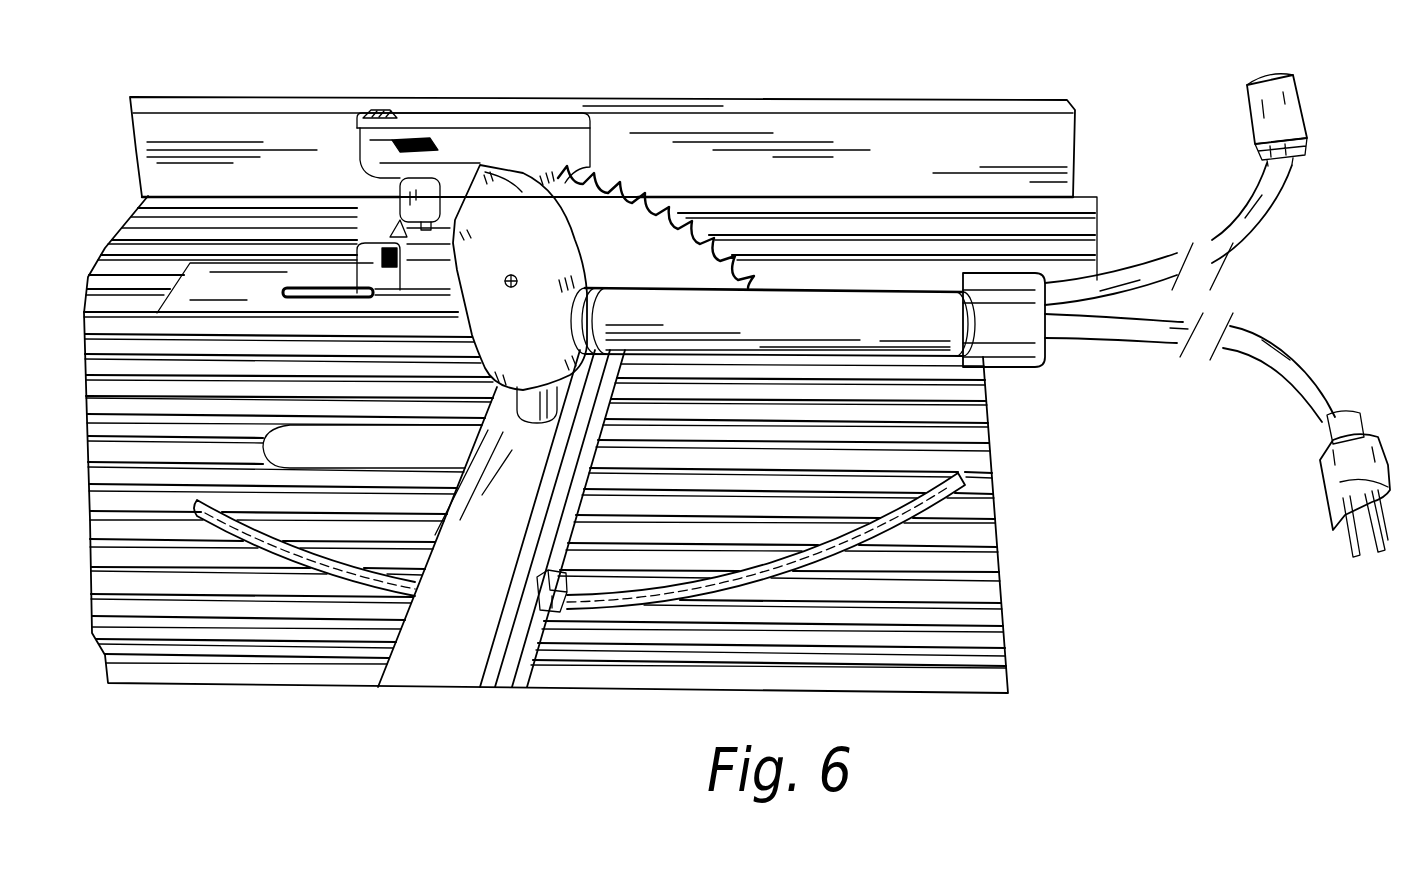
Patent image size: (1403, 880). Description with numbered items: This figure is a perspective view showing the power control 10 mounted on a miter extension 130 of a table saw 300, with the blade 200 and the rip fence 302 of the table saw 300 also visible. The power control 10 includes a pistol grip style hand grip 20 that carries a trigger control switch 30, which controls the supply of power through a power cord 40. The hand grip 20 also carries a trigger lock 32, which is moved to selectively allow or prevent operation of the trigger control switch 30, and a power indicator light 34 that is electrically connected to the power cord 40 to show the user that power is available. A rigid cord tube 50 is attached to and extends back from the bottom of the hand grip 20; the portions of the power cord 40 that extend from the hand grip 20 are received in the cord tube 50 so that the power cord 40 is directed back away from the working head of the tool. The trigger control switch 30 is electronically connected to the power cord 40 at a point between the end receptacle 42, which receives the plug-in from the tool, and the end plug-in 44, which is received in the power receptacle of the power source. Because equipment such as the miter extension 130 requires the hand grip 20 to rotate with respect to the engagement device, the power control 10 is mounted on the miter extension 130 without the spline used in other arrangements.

The power control 10 is at (605, 56).
The hand grip 20 is at (519, 254).
The trigger control switch 30 is at (400, 186).
The trigger lock 32 is at (417, 127).
The power indicator light 34 is at (428, 67).
The power cord 40 is at (1131, 266).
The end receptacle 42 is at (1273, 83).
The end plug-in 44 is at (1322, 475).
The cord tube 50 is at (843, 330).
The miter extension 130 is at (450, 673).
The blade 200 is at (653, 272).
The table saw 300 is at (1008, 603).
The rip fence 302 is at (940, 63).